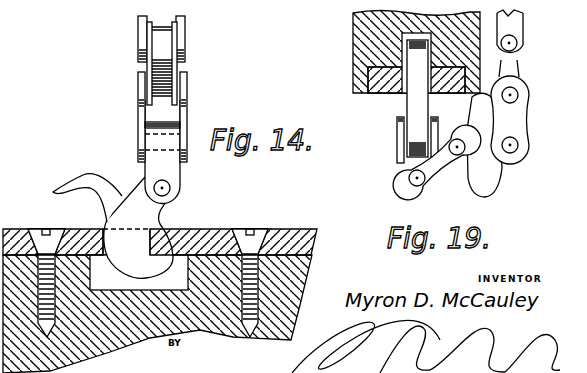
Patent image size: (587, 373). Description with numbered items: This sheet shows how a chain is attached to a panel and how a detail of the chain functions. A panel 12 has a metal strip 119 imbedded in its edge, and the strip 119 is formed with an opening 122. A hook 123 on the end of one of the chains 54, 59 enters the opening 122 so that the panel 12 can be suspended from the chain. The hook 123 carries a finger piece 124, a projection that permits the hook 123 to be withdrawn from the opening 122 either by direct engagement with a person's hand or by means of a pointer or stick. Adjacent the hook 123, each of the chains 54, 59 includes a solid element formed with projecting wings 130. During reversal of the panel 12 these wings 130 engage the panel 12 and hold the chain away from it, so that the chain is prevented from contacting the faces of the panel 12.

In FIG. 14, the panel 12 is at (303, 270).
In FIG. 19, the panel 12 is at (365, 30).
In FIG. 14, the chain 54 is at (187, 108).
In FIG. 19, the chain 54 is at (514, 72).
In FIG. 14, the chain 59 is at (198, 63).
In FIG. 19, the chain 59 is at (483, 110).
In FIG. 14, the metal strip 119 is at (13, 242).
In FIG. 19, the metal strip 119 is at (366, 83).
In FIG. 14, the opening 122 is at (92, 231).
In FIG. 14, the hook 123 is at (133, 252).
In FIG. 19, the hook 123 is at (413, 101).
In FIG. 14, the finger piece 124 is at (79, 176).
In FIG. 19, the wing 130 is at (480, 178).